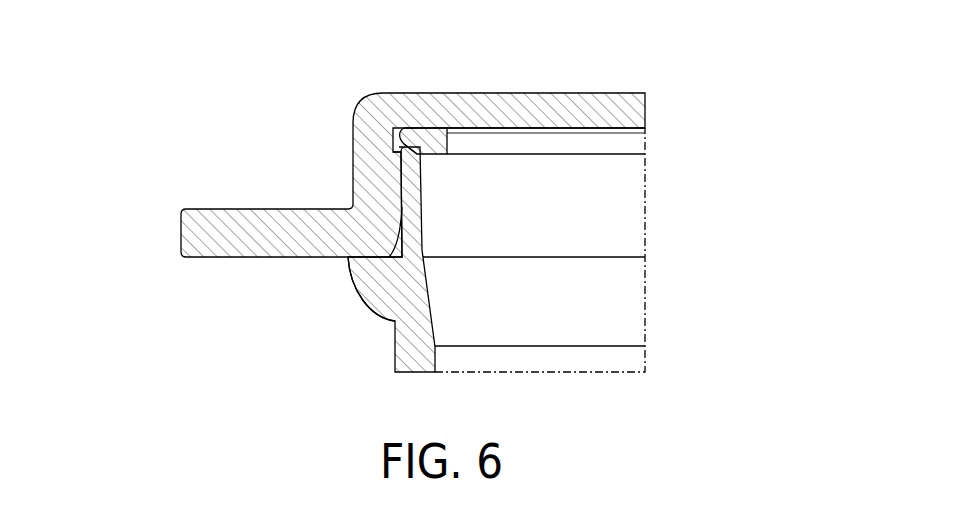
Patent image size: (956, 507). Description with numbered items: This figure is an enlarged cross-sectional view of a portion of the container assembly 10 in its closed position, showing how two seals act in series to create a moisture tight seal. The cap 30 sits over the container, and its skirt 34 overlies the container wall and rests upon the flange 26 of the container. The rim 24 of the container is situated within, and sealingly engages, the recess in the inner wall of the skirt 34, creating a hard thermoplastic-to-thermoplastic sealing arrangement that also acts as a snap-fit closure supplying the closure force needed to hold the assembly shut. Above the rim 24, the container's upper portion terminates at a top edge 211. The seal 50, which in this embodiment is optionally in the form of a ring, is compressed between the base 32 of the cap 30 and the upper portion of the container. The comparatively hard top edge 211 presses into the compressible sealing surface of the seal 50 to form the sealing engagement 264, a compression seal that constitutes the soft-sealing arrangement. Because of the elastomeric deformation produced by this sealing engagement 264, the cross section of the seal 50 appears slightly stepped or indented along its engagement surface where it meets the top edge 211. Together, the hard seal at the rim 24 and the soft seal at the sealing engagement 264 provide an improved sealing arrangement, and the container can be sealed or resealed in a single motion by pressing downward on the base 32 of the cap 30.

The container assembly 10 is at (168, 51).
The rim 24 is at (413, 162).
The flange 26 is at (378, 290).
The cap 30 is at (505, 110).
The base 32 is at (582, 113).
The skirt 34 is at (375, 197).
The seal 50 is at (440, 142).
The top edge 211 is at (404, 154).
The sealing engagement 264 is at (420, 141).